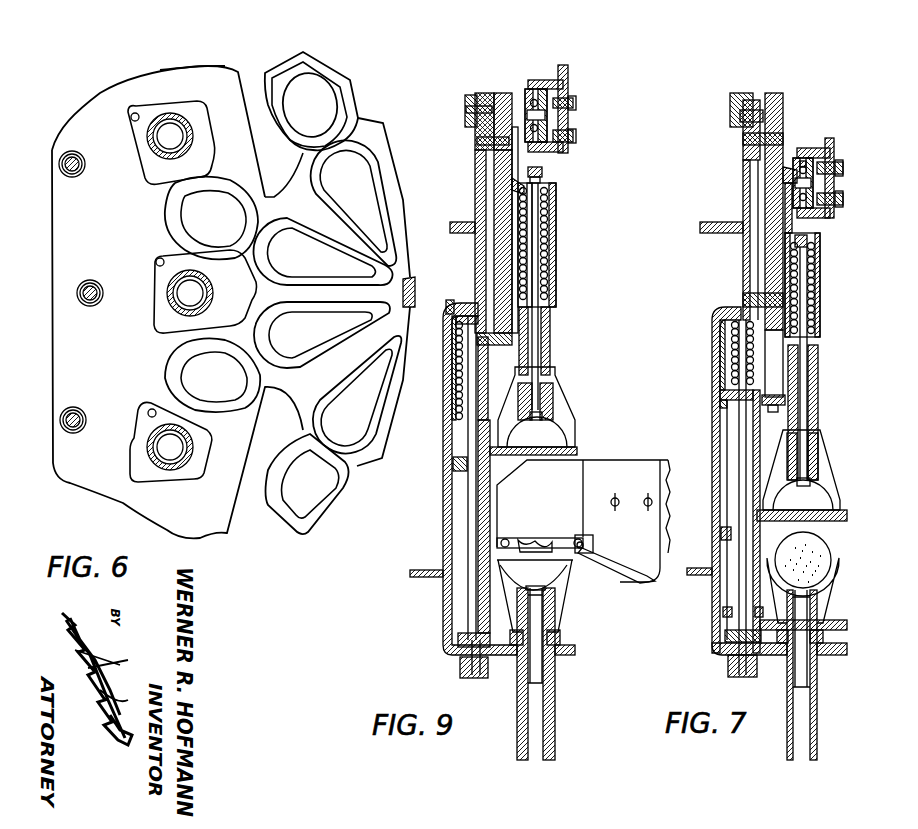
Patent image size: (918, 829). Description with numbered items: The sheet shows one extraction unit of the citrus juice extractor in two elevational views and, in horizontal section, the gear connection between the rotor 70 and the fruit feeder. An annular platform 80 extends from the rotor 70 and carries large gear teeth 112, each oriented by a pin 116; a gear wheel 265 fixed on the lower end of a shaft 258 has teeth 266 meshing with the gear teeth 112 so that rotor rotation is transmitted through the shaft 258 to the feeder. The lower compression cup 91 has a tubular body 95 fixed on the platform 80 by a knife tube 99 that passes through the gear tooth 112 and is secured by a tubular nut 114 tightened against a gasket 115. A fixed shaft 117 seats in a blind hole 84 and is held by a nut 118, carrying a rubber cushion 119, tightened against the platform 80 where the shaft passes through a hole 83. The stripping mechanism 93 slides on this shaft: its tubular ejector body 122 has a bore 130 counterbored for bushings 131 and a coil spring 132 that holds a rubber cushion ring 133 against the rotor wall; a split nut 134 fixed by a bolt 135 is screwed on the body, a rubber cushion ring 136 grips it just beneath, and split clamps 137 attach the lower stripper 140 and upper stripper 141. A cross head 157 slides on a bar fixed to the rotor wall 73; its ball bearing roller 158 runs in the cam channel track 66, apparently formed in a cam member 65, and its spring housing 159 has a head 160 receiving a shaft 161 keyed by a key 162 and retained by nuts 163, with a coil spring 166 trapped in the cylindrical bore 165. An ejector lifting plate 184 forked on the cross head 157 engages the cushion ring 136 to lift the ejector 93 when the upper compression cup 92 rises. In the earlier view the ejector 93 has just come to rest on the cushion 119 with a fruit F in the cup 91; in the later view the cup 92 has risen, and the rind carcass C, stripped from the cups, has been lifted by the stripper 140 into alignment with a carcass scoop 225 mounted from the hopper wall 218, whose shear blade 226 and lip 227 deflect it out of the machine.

In FIG. 6, the rotor 70 is at (142, 90).
In FIG. 9, the rotor 70 is at (461, 216).
In FIG. 7, the rotor 70 is at (718, 216).
In FIG. 6, the annular platform 80 is at (198, 78).
In FIG. 7, the annular platform 80 is at (830, 655).
In FIG. 6, the knife tube 99 is at (183, 120).
In FIG. 6, the tubular body 95 is at (193, 136).
In FIG. 6, the gear tooth 112 is at (143, 160).
In FIG. 6, the pin 116 is at (156, 260).
In FIG. 6, the fixed shaft 117 is at (73, 177).
In FIG. 9, the fixed shaft 117 is at (470, 608).
In FIG. 7, the fixed shaft 117 is at (739, 592).
In FIG. 6, the gear wheel 265 is at (310, 388).
In FIG. 6, the teeth 266 is at (340, 502).
In FIG. 6, the shaft 258 is at (413, 283).
In FIG. 9, the cam channel track 66 is at (534, 88).
In FIG. 7, the cam channel track 66 is at (811, 148).
In FIG. 9, the bearing plate 65 is at (568, 84).
In FIG. 7, the bearing plate 65 is at (834, 143).
In FIG. 9, the nuts 163 is at (543, 172).
In FIG. 9, the key 162 is at (543, 178).
In FIG. 9, the head 160 is at (556, 186).
In FIG. 9, the spring housing 159 is at (557, 214).
In FIG. 9, the cylindrical bore 165 is at (548, 238).
In FIG. 9, the coil spring 166 is at (548, 259).
In FIG. 9, the shaft 161 is at (548, 290).
In FIG. 7, the shaft 161 is at (810, 421).
In FIG. 9, the rubber cushion ring 133 is at (458, 306).
In FIG. 7, the rubber cushion ring 133 is at (715, 323).
In FIG. 9, the rubber cushion ring 136 is at (449, 305).
In FIG. 7, the rubber cushion ring 136 is at (723, 403).
In FIG. 9, the split nut 134 is at (453, 331).
In FIG. 7, the split nut 134 is at (722, 387).
In FIG. 9, the bolt 135 is at (458, 340).
In FIG. 7, the bolt 135 is at (721, 393).
In FIG. 9, the ejector lifting plate 184 is at (478, 358).
In FIG. 7, the ejector lifting plate 184 is at (752, 411).
In FIG. 9, the coil spring 132 is at (460, 406).
In FIG. 7, the coil spring 132 is at (731, 341).
In FIG. 9, the carcass ejecting or stripping mechanism 93 is at (458, 427).
In FIG. 7, the carcass ejecting or stripping mechanism 93 is at (733, 493).
In FIG. 9, the bushings 131 is at (455, 474).
In FIG. 9, the bore 130 is at (476, 488).
In FIG. 9, the tubular ejector body 122 is at (457, 522).
In FIG. 7, the tubular ejector body 122 is at (729, 428).
In FIG. 9, the upper compression cup 92 is at (563, 410).
In FIG. 7, the upper compression cup 92 is at (830, 474).
In FIG. 9, the tubular nut 114 is at (555, 722).
In FIG. 7, the tubular nut 114 is at (818, 716).
In FIG. 9, the gasket 115 is at (553, 657).
In FIG. 9, the carcass scoop 225 is at (600, 472).
In FIG. 9, the circular hopper wall 218 is at (668, 480).
In FIG. 9, the shear blade 226 is at (589, 540).
In FIG. 9, the lip 227 is at (618, 578).
In FIG. 9, the rind carcass C is at (540, 540).
In FIG. 7, the rotor wall 73 is at (746, 258).
In FIG. 7, the blind holes 84 is at (745, 303).
In FIG. 7, the ball bearing roller 158 is at (823, 159).
In FIG. 7, the cross head 157 is at (797, 228).
In FIG. 7, the split clamps 137 is at (722, 533).
In FIG. 7, the upper stripper 141 is at (847, 514).
In FIG. 7, the float ball F is at (833, 548).
In FIG. 7, the lower compression cup 91 is at (837, 588).
In FIG. 7, the lower stripper 140 is at (847, 624).
In FIG. 7, the rubber cushion 119 is at (731, 631).
In FIG. 7, the nut 118 is at (728, 648).
In FIG. 7, the holes 83 is at (732, 659).